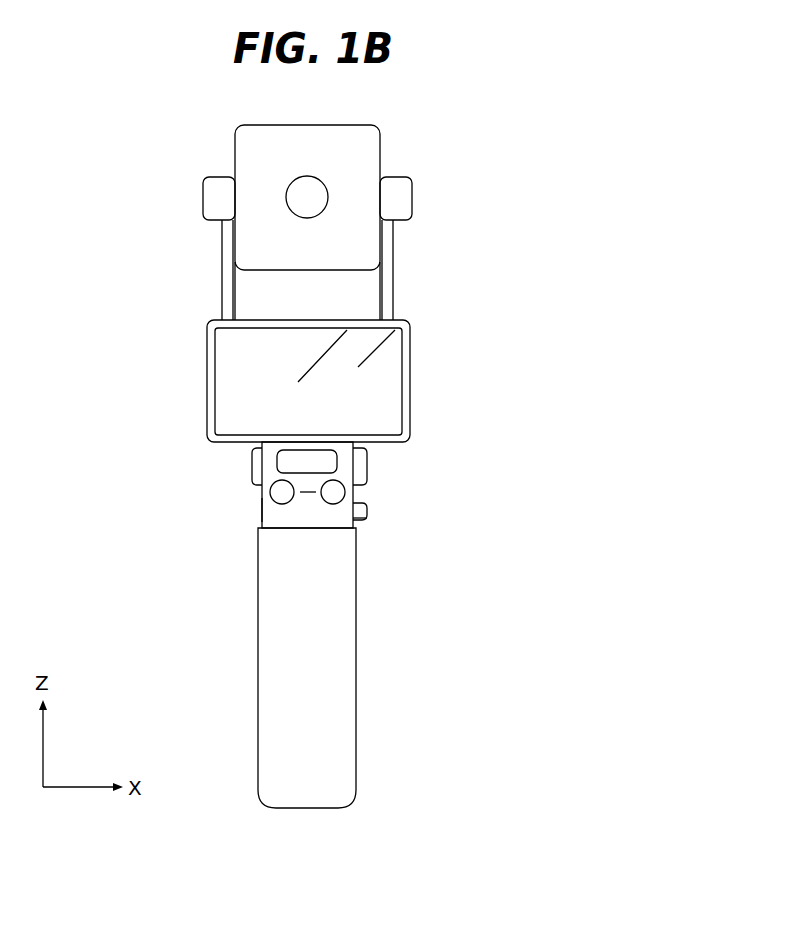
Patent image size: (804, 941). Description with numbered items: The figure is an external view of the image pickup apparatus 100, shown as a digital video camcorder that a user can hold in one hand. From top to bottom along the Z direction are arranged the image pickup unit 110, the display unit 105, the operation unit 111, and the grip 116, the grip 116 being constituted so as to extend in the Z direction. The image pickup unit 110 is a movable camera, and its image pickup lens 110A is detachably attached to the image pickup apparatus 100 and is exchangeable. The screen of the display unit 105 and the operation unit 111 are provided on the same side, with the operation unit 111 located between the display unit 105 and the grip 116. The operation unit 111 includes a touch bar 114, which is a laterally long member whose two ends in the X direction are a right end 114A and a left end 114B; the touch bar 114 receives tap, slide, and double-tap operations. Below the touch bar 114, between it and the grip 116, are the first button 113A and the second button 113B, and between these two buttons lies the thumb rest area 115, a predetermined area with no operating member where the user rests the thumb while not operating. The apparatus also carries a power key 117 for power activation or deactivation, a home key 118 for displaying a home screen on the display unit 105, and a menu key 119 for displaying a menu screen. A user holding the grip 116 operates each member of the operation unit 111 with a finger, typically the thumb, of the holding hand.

The image pickup apparatus 100 is at (158, 175).
The image pickup unit 110 is at (235, 153).
The image pickup lens 110A is at (328, 197).
The display unit 105 is at (410, 363).
The operation unit 111 is at (283, 510).
The touch bar 114 is at (283, 461).
The right end 114A is at (337, 463).
The left end 114B is at (278, 492).
The first button 113A is at (345, 492).
The second button 113B is at (262, 503).
The power key 117 is at (367, 462).
The home key 118 is at (252, 458).
The menu key 119 is at (367, 514).
The thumb rest area 115 is at (308, 492).
The grip 116 is at (266, 677).